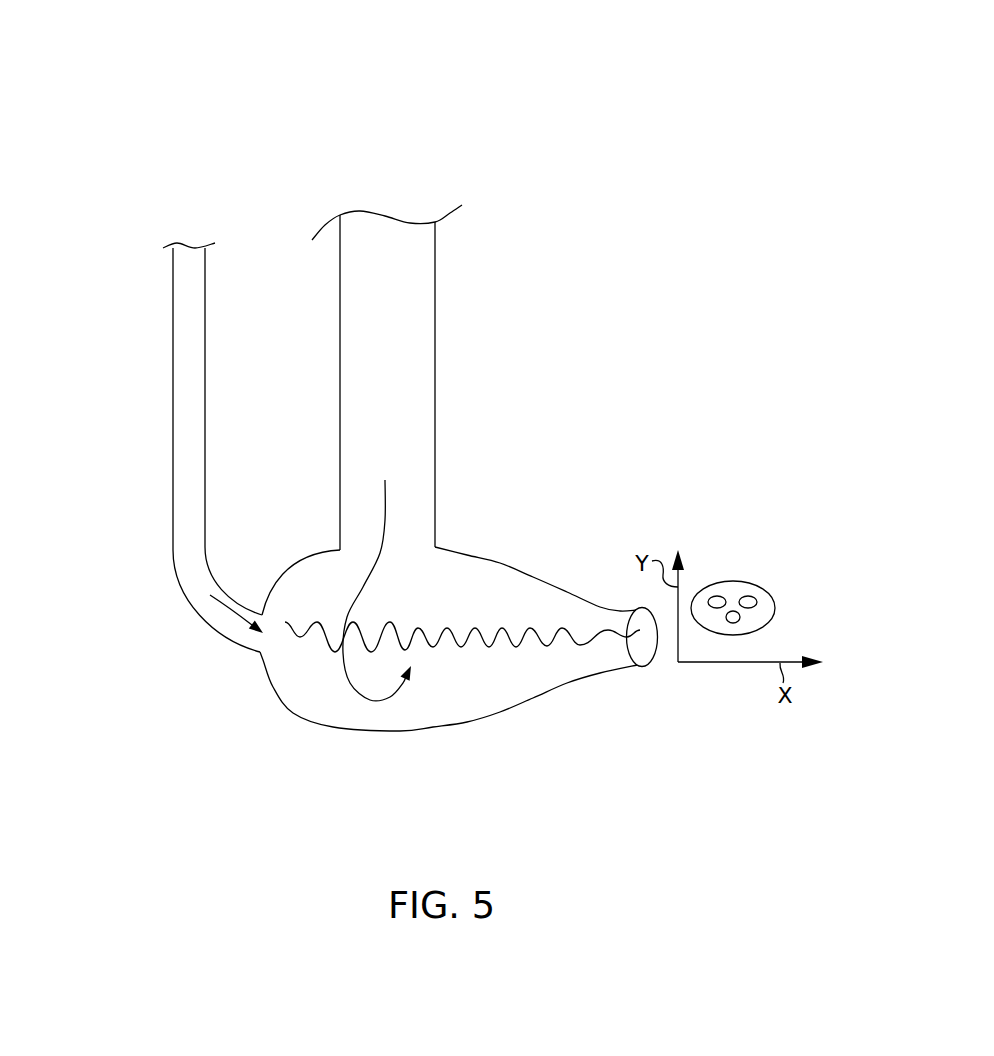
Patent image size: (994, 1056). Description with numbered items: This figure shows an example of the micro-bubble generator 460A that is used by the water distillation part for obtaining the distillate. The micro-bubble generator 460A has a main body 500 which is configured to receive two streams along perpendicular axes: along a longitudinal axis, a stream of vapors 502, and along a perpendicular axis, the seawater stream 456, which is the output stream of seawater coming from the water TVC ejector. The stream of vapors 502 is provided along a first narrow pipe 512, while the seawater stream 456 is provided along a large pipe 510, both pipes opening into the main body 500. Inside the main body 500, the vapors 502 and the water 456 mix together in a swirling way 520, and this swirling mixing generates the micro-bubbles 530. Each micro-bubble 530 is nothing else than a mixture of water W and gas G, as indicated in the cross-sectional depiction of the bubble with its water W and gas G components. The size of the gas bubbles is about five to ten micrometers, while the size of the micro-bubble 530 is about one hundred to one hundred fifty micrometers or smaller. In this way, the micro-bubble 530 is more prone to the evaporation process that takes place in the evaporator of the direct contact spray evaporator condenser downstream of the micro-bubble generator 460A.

The micro-bubble generator 460A is at (489, 64).
The large pipe 510 is at (435, 330).
The first narrow pipe 512 is at (172, 443).
The stream of vapors 502 is at (210, 617).
The main body 500 is at (478, 721).
The seawater stream 456 is at (385, 510).
The swirling way 520 is at (563, 632).
The micro-bubbles 530 is at (775, 605).
The water W is at (735, 590).
The gas G is at (730, 623).